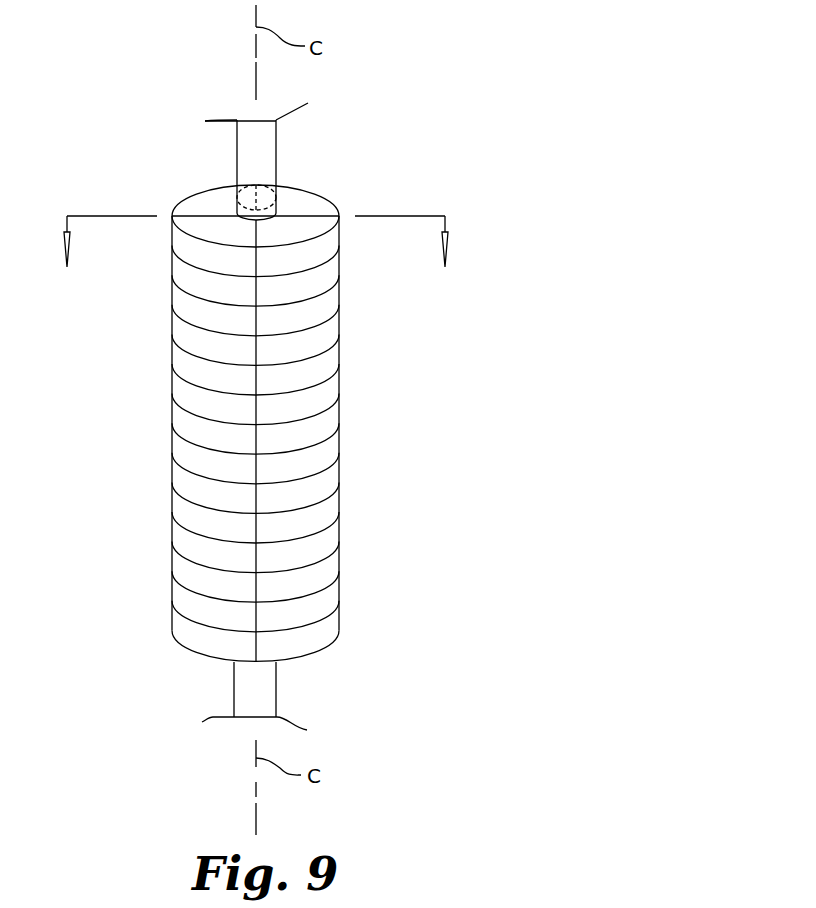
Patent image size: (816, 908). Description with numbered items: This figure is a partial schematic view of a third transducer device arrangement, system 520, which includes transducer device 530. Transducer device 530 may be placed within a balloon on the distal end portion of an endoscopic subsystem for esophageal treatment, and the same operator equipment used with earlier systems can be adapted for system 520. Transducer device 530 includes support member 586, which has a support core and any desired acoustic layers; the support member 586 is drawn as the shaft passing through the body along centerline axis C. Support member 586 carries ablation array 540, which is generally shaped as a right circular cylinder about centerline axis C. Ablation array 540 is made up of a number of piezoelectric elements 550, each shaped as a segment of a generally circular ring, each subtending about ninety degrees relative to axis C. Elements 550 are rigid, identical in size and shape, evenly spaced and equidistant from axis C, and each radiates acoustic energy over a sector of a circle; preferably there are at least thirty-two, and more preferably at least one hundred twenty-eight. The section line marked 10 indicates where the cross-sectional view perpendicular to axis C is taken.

The system 520 is at (428, 90).
The transducer device 530 is at (339, 636).
The ablation array 540 is at (172, 636).
The piezoelectric elements 550 is at (339, 223).
The support member 586 is at (237, 160).
The section line 10- 10 is at (254, 225).